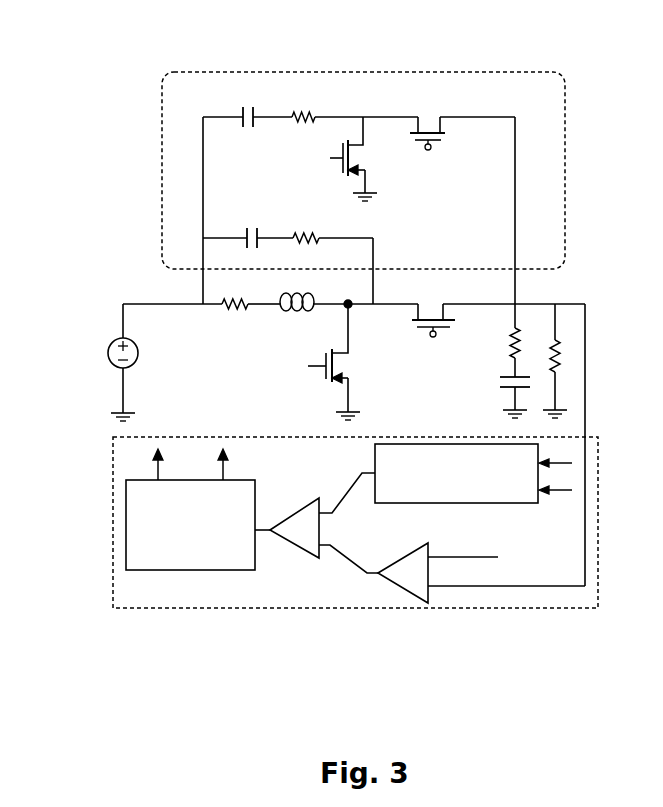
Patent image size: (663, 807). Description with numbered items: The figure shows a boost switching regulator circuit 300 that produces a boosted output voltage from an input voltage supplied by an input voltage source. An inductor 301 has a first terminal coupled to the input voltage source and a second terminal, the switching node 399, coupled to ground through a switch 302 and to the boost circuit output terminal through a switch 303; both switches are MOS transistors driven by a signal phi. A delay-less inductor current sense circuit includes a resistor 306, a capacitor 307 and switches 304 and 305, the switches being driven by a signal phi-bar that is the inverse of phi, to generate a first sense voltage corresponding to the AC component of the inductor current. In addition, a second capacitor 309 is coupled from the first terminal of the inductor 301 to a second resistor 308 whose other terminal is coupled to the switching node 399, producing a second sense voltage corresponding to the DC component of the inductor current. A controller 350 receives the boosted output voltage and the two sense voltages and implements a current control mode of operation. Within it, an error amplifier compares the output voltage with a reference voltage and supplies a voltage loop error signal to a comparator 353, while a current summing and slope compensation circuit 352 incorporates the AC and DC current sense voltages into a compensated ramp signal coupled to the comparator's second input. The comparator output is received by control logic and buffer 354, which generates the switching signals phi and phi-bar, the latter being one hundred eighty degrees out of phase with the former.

The boost switching regulator circuit 300 is at (90, 45).
The inductor 301 is at (312, 338).
The switch 302 is at (379, 371).
The switch 303 is at (448, 295).
The switch 304 is at (397, 162).
The switch 305 is at (480, 138).
The resistor 306 is at (338, 103).
The capacitor 307 is at (270, 154).
The second resistor 308 is at (353, 229).
The second capacitor 309 is at (246, 223).
The switching node 399 is at (363, 295).
The controller 350 is at (251, 599).
The current summing & slope compensation circuit 352 is at (435, 504).
The comparator 353 is at (300, 563).
The control logic and buffer 354 is at (176, 566).